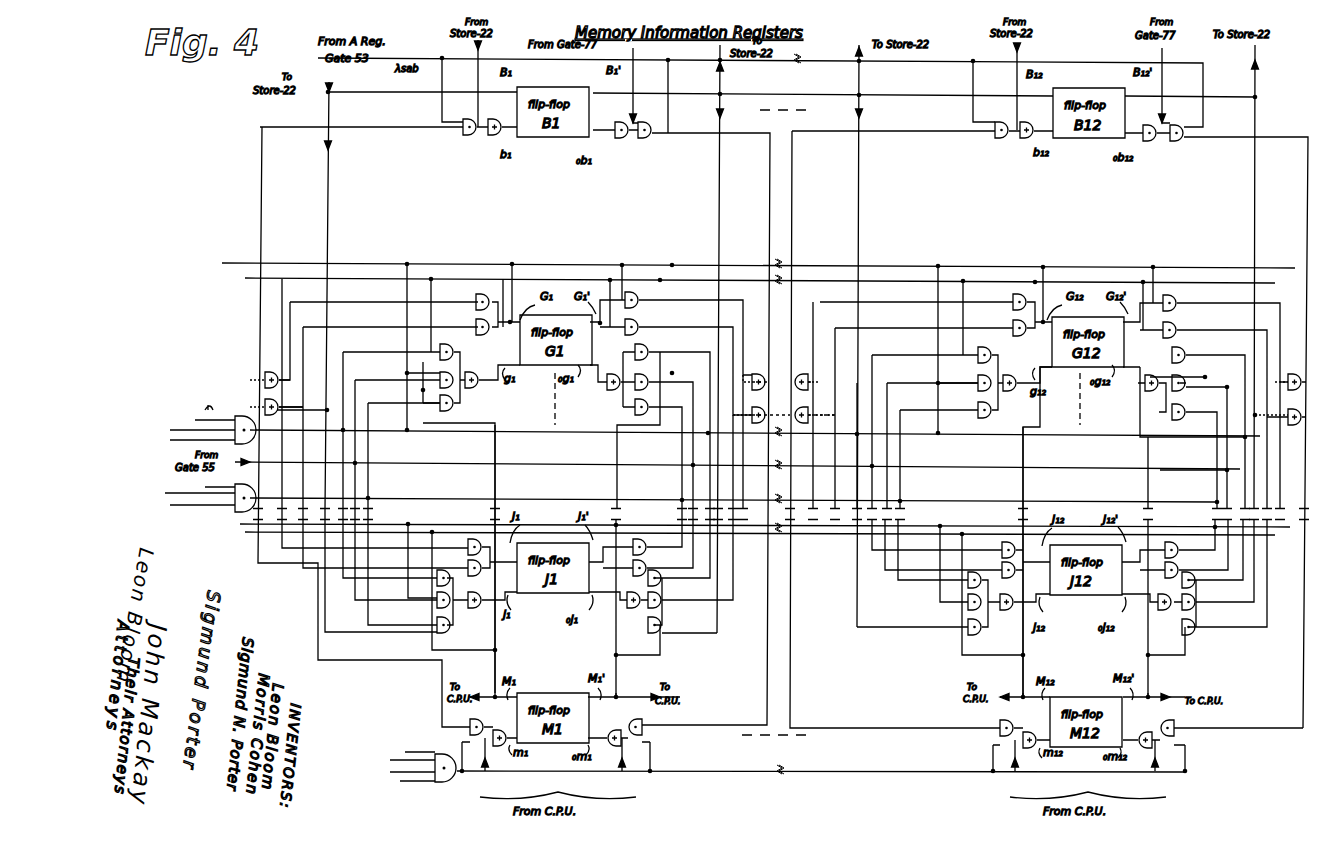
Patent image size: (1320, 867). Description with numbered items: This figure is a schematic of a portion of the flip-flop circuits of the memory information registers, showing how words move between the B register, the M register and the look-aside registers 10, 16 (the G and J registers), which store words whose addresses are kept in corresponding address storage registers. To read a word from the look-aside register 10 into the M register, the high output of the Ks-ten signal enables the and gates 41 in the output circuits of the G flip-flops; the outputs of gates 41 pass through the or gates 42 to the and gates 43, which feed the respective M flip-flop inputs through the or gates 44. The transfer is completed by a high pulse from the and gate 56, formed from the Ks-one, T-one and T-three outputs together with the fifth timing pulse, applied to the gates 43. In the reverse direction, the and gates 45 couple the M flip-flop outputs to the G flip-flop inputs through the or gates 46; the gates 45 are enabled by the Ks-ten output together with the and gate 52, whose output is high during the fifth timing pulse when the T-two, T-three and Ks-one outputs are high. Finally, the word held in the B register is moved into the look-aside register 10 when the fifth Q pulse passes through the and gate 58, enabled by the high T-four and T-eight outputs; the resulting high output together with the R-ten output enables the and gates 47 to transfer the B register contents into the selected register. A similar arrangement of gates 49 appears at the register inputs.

The look-aside register 10 is at (235, 325).
The look-aside information storage register 16 is at (310, 580).
The and gate 41 is at (1169, 313).
The or gate 42 is at (1297, 409).
The and gate 43 is at (1175, 722).
The or gate 44 is at (1143, 730).
The and gate 45 is at (1168, 350).
The or gate 46 is at (818, 491).
The and gate 47 is at (1170, 417).
The AND gate 49 is at (1177, 374).
The and gate 52 is at (235, 442).
The and gate 56 is at (442, 782).
The and gate 58 is at (240, 494).